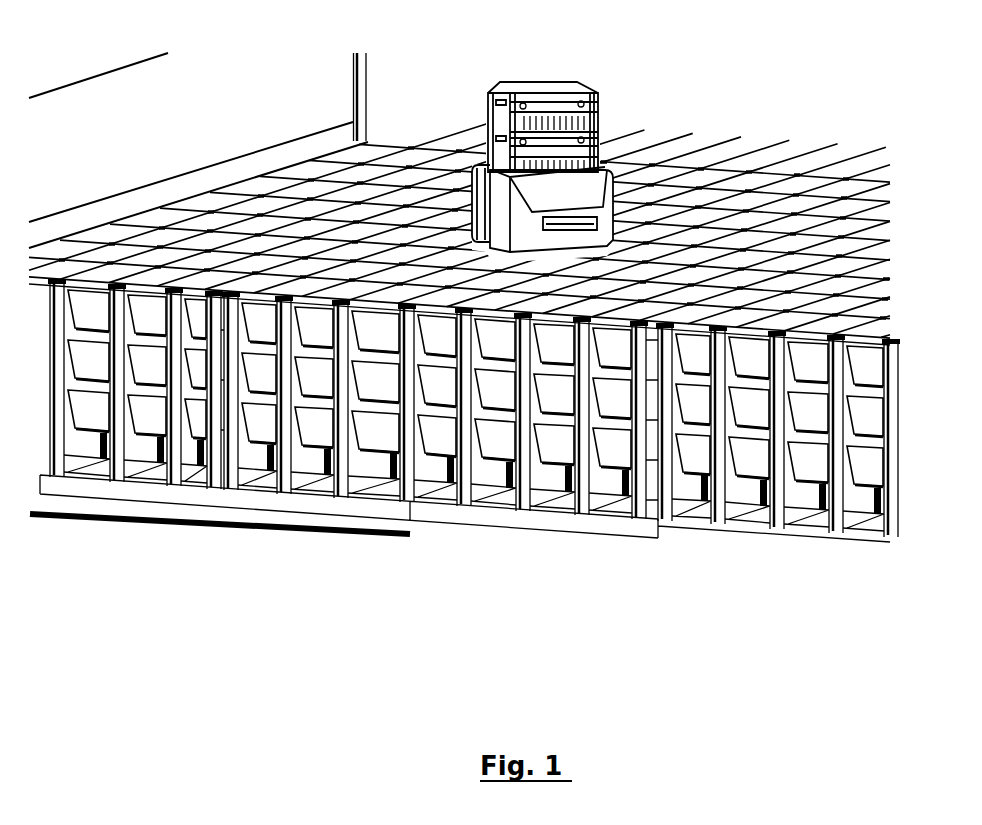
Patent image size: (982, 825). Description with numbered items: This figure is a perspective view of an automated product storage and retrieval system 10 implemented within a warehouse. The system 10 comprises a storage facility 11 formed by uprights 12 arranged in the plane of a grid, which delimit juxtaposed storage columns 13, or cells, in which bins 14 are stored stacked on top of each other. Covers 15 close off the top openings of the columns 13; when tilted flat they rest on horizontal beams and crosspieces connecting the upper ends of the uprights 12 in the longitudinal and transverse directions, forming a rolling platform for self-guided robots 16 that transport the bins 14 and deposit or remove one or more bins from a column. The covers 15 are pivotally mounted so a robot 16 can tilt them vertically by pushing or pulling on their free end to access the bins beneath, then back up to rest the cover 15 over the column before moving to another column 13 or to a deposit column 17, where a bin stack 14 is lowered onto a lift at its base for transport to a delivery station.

The system 10 is at (762, 556).
The storage facility 11 is at (133, 482).
The uprights 12 is at (515, 487).
The storage columns 13 is at (607, 493).
The bins 14 is at (372, 332).
The covers 15 is at (825, 243).
The self-guided robots 16 is at (593, 190).
The deposit column 17 is at (281, 272).